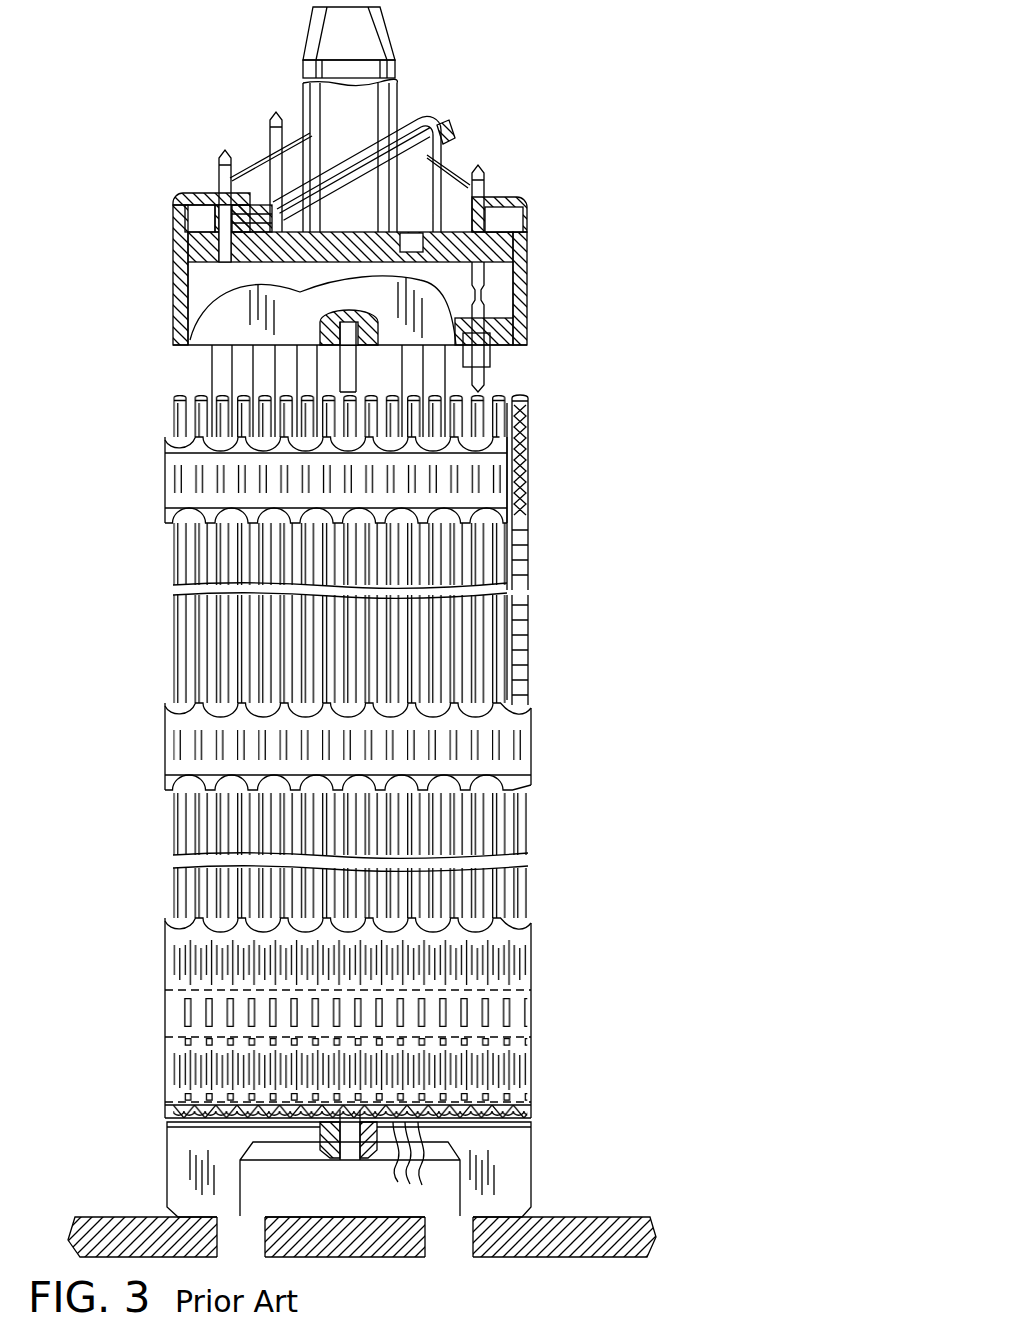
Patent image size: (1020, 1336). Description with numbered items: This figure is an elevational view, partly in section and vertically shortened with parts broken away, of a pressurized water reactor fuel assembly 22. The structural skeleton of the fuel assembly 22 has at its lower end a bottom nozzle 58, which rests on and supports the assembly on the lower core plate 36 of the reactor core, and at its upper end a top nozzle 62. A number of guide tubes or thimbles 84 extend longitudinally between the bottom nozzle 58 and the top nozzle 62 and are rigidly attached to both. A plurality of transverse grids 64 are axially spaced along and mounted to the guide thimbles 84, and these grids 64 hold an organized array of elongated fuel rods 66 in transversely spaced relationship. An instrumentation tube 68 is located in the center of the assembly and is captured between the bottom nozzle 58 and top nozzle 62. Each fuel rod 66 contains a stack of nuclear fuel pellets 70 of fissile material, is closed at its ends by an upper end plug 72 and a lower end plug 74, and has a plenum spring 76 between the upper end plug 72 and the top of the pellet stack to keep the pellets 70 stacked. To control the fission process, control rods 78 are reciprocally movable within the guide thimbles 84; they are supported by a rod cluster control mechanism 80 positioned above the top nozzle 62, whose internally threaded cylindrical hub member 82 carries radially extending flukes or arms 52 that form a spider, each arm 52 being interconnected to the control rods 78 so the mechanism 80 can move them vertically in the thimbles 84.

The fuel assembly 22 is at (613, 262).
The lower core plate 36 is at (572, 1217).
The arms 52 is at (298, 138).
The bottom nozzle 58 is at (535, 1166).
The top nozzle 62 is at (527, 248).
The transverse grids 64 is at (165, 490).
The fuel rods 66 is at (167, 652).
The instrumentation tube 68 is at (353, 1160).
The nuclear fuel pellets 70 is at (520, 557).
The upper end plug 72 is at (530, 400).
The lower end plug 74 is at (423, 1162).
The plenum spring 76 is at (530, 462).
The control rods 78 is at (488, 310).
The rod cluster control mechanism 80 is at (440, 112).
The cylindrical hub member 82 is at (398, 100).
The guide thimbles 84 is at (487, 388).